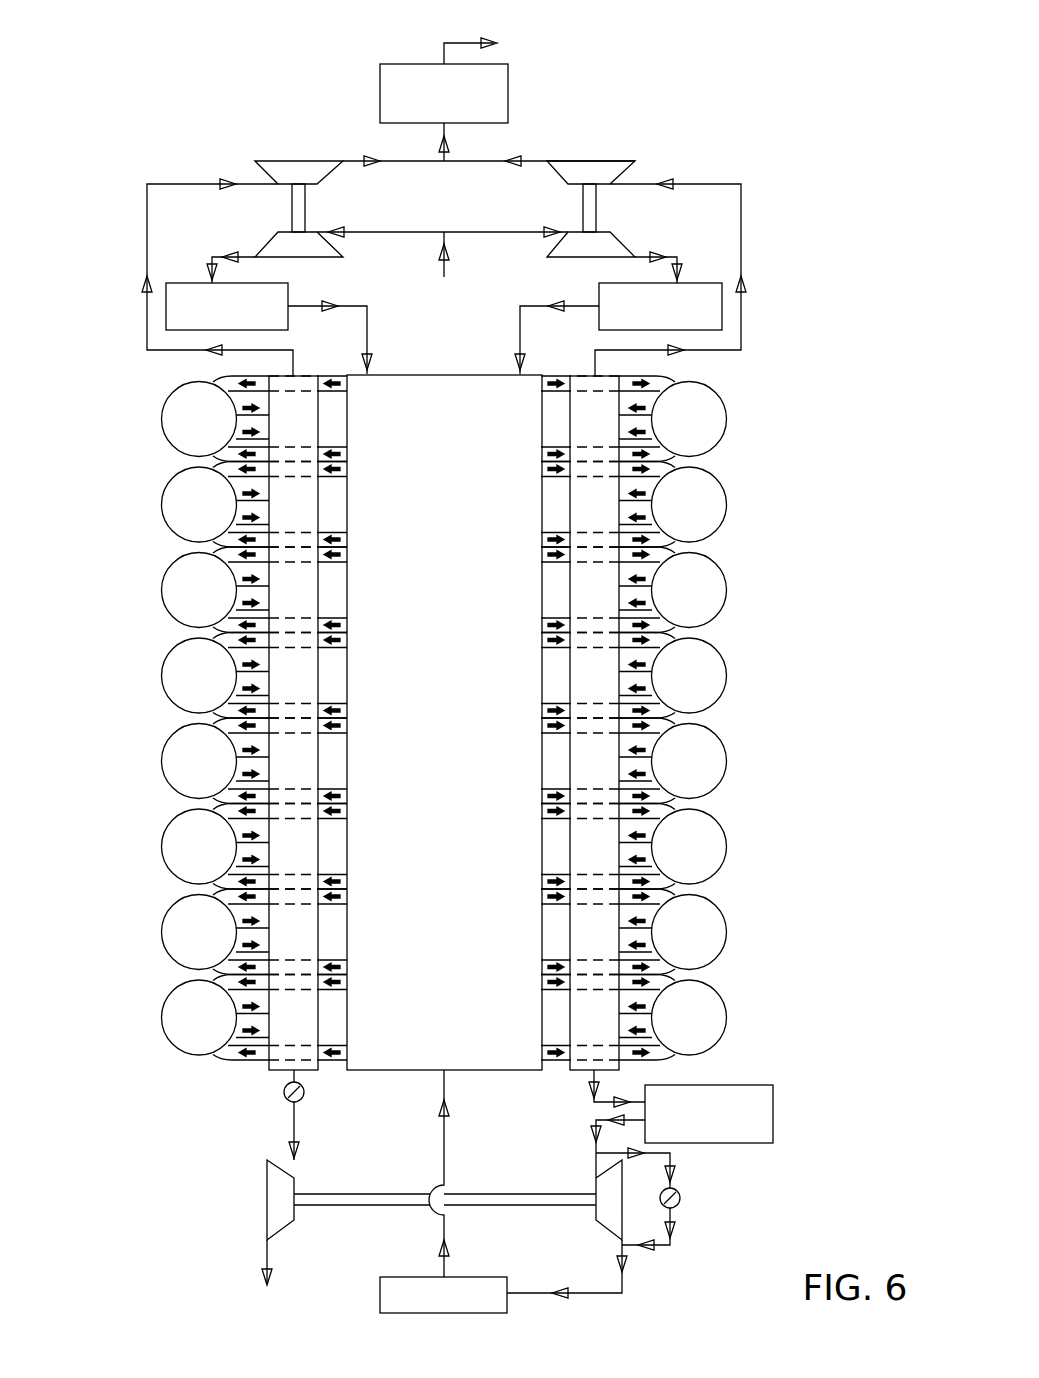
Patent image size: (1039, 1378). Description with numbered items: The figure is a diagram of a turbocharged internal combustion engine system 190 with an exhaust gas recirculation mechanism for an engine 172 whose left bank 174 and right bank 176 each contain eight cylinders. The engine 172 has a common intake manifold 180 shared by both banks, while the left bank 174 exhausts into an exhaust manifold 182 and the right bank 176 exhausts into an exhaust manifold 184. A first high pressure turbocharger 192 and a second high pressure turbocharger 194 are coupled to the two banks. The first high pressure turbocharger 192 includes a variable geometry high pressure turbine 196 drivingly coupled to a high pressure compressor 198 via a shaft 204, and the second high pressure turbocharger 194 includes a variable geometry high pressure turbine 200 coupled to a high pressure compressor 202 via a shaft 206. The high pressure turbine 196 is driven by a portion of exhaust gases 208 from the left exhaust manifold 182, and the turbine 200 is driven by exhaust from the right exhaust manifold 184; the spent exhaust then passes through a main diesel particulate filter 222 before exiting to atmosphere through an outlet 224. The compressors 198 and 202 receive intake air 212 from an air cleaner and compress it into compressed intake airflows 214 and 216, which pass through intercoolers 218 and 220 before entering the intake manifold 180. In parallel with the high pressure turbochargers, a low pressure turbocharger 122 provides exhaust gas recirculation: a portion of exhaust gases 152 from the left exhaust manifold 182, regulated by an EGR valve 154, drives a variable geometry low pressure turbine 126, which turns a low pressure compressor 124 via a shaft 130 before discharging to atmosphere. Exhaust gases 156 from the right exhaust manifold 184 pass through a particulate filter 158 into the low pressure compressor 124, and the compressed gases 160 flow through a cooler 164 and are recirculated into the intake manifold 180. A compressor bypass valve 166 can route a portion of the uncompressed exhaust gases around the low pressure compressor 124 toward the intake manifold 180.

The turbocharged internal combustion engine system 190 is at (178, 28).
The first high pressure turbocharger 192 is at (126, 112).
The second high pressure turbocharger 194 is at (756, 122).
The variable geometry high pressure turbine 196 is at (300, 160).
The variable geometry high pressure turbine 200 is at (590, 160).
The high pressure compressor 198 is at (318, 258).
The high pressure compressor 202 is at (590, 258).
The shaft 204 is at (292, 210).
The shaft 206 is at (598, 220).
The portion of exhaust gases 208 is at (147, 325).
The intake air 212 is at (448, 272).
The compressed intake airflow 214 is at (367, 360).
The compressed intake airflow 216 is at (520, 360).
The intercooler 218 is at (194, 283).
The intercooler 220 is at (722, 305).
The main diesel particulate filter 222 is at (508, 95).
The exhaust outlet to atmosphere 224 is at (444, 52).
The engine 172 is at (770, 446).
The engine left bank 174 is at (132, 928).
The engine right bank 176 is at (762, 895).
The common intake manifold 180 is at (418, 1070).
The exhaust manifold 182 is at (312, 583).
The exhaust manifold 184 is at (567, 512).
The low pressure turbocharger 122 is at (362, 1224).
The low pressure compressor 124 is at (596, 1190).
The variable geometry low pressure turbine 126 is at (267, 1200).
The shaft 130 is at (377, 1194).
The exhaust gases 152 is at (327, 1117).
The EGR valve 154 is at (306, 1092).
The exhaust gases 156 is at (594, 1085).
The particulate filter 158 is at (773, 1115).
The compressed gases 160 is at (625, 1265).
The cooler 164 is at (507, 1305).
The compressor bypass valve 166 is at (677, 1180).